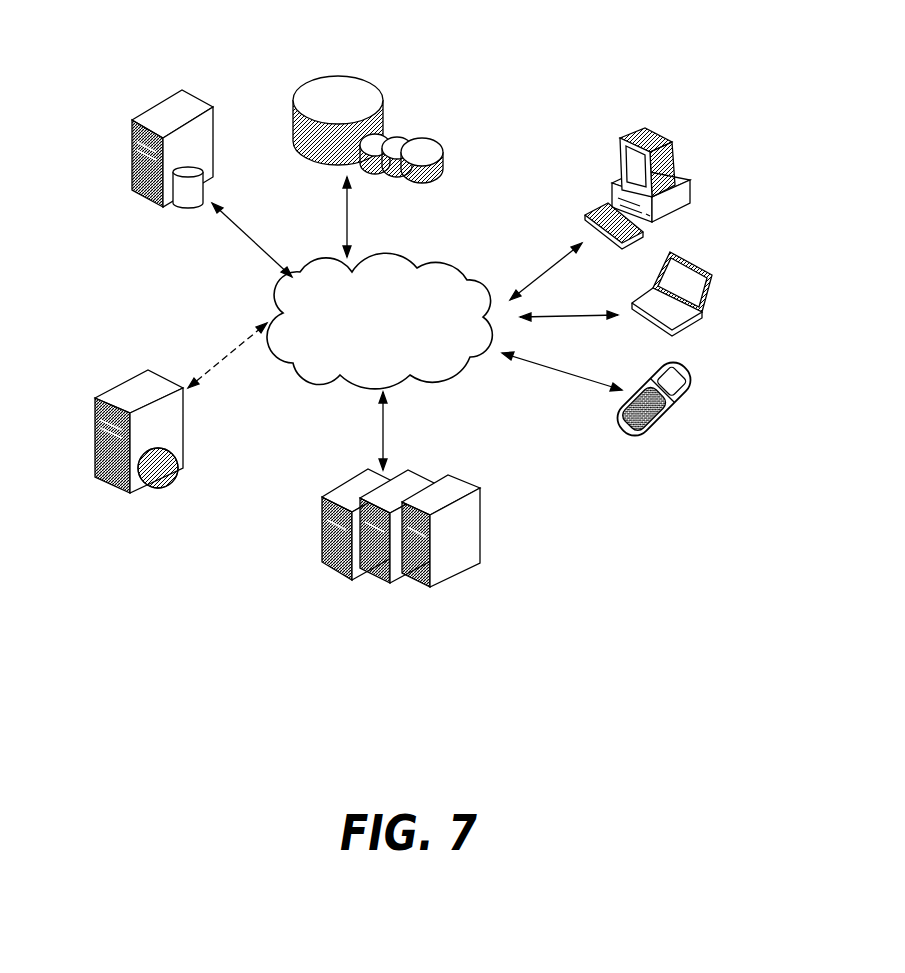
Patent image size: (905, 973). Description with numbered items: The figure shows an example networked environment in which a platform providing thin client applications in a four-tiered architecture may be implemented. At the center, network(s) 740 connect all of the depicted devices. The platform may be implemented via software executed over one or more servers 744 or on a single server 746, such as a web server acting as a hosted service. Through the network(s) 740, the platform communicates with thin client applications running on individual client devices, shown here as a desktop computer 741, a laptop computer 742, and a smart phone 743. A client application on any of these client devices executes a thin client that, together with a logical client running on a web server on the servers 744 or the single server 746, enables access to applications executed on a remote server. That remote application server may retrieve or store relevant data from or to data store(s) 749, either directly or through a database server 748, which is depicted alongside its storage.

The network(s) 740 is at (387, 241).
The desktop computer 741 is at (679, 119).
The laptop computer 742 is at (716, 244).
The smart phone 743 is at (687, 368).
The servers 744 is at (348, 471).
The single server 746 is at (118, 376).
The database server 748 is at (187, 222).
The data store(s) 749 is at (356, 48).